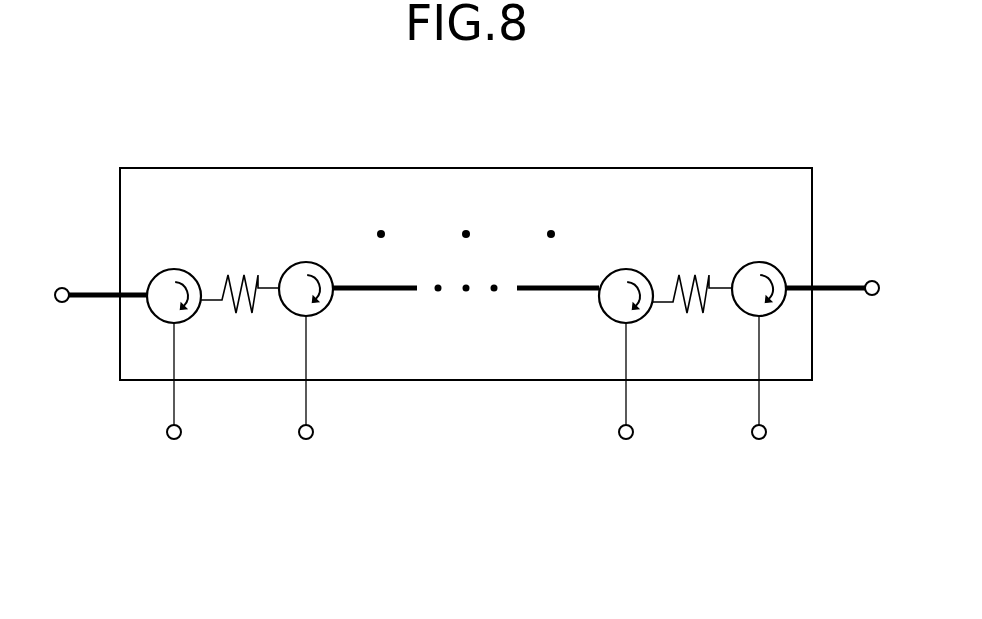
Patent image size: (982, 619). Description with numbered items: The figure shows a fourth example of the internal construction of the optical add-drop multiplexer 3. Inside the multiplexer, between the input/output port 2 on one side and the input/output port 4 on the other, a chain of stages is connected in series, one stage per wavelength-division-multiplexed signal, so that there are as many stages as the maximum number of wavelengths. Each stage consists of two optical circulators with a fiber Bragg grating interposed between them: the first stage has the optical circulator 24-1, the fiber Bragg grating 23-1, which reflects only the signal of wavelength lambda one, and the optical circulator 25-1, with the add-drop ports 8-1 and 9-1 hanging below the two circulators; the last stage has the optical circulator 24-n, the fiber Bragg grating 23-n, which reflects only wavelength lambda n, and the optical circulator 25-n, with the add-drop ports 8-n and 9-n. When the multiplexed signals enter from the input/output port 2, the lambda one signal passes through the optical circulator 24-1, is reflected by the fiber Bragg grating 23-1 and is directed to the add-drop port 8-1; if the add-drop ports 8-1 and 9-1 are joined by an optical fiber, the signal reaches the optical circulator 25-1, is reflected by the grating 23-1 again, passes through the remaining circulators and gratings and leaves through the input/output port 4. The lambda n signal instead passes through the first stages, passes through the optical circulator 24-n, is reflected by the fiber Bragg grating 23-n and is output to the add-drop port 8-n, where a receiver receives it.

The input/output port 2 is at (62, 288).
The optical add-drop multiplexer 3 is at (787, 380).
The input/output port 4 is at (872, 281).
The optical circulator 24-1 is at (174, 269).
The optical circulator 25-1 is at (306, 262).
The fiber Bragg grating 23-1 is at (243, 313).
The add-drop port 8-1 is at (174, 439).
The add-drop port 9-1 is at (306, 439).
The optical circulator 24-n is at (626, 269).
The optical circulator 25-n is at (759, 262).
The fiber Bragg grating 23-n is at (695, 313).
The add-drop port 8-n is at (626, 439).
The add-drop port 9-n is at (759, 439).